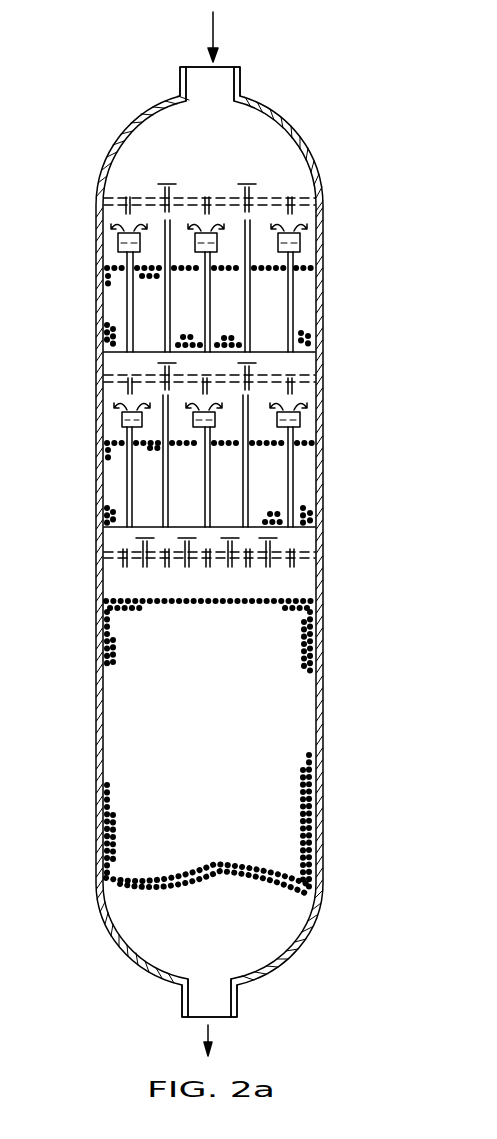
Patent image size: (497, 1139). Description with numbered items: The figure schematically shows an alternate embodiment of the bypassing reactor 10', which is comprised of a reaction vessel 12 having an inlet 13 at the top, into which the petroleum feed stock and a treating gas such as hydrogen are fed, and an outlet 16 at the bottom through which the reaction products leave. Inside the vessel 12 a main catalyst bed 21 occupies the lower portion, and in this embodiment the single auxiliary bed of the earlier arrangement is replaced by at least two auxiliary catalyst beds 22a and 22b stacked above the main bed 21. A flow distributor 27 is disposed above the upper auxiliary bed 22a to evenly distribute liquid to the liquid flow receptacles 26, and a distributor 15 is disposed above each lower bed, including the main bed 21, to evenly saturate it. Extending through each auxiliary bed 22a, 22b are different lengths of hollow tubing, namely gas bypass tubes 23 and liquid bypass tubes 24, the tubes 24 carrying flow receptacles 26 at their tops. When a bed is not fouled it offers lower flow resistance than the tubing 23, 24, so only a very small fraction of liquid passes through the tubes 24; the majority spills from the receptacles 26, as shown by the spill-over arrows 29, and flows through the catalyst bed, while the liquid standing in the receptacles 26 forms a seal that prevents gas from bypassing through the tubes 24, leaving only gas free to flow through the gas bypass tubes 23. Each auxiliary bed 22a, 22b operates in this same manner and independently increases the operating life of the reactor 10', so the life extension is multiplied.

The reactor 10' is at (271, 534).
The reaction vessel 12 is at (323, 685).
The inlet 13 is at (218, 80).
The flow distributor 15 is at (308, 392).
The outlet 16 is at (218, 1003).
The main catalyst bed 21 is at (215, 742).
The auxiliary catalyst bed 22a is at (270, 323).
The auxiliary catalyst bed 22b is at (268, 492).
The gas bypass tubes 23 is at (167, 318).
The liquid bypass tubes 24 is at (128, 300).
The flow receptacles 26 is at (118, 243).
The flow distributor 27 is at (297, 208).
The spill-over arrows 29 is at (115, 224).